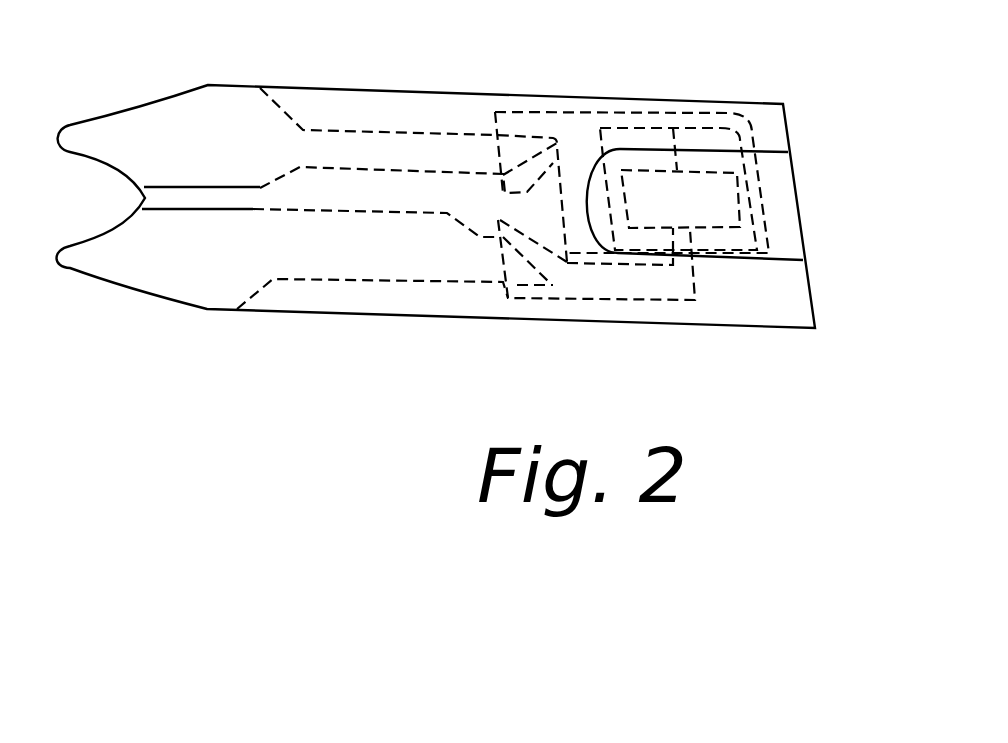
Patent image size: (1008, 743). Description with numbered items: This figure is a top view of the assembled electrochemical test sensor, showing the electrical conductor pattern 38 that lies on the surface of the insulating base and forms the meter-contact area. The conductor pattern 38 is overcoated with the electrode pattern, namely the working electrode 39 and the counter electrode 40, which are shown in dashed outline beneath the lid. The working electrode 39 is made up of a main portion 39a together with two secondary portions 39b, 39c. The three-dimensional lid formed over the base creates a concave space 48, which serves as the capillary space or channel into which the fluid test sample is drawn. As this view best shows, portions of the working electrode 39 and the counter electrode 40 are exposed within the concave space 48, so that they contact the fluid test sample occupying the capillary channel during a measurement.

The electrical conductor pattern 38 is at (356, 130).
The working electrode 39 is at (577, 285).
The main portion 39a is at (710, 231).
The secondary portion 39b is at (680, 256).
The secondary portion 39c is at (665, 170).
The counter electrode 40 is at (540, 112).
The concave space 48 is at (785, 254).